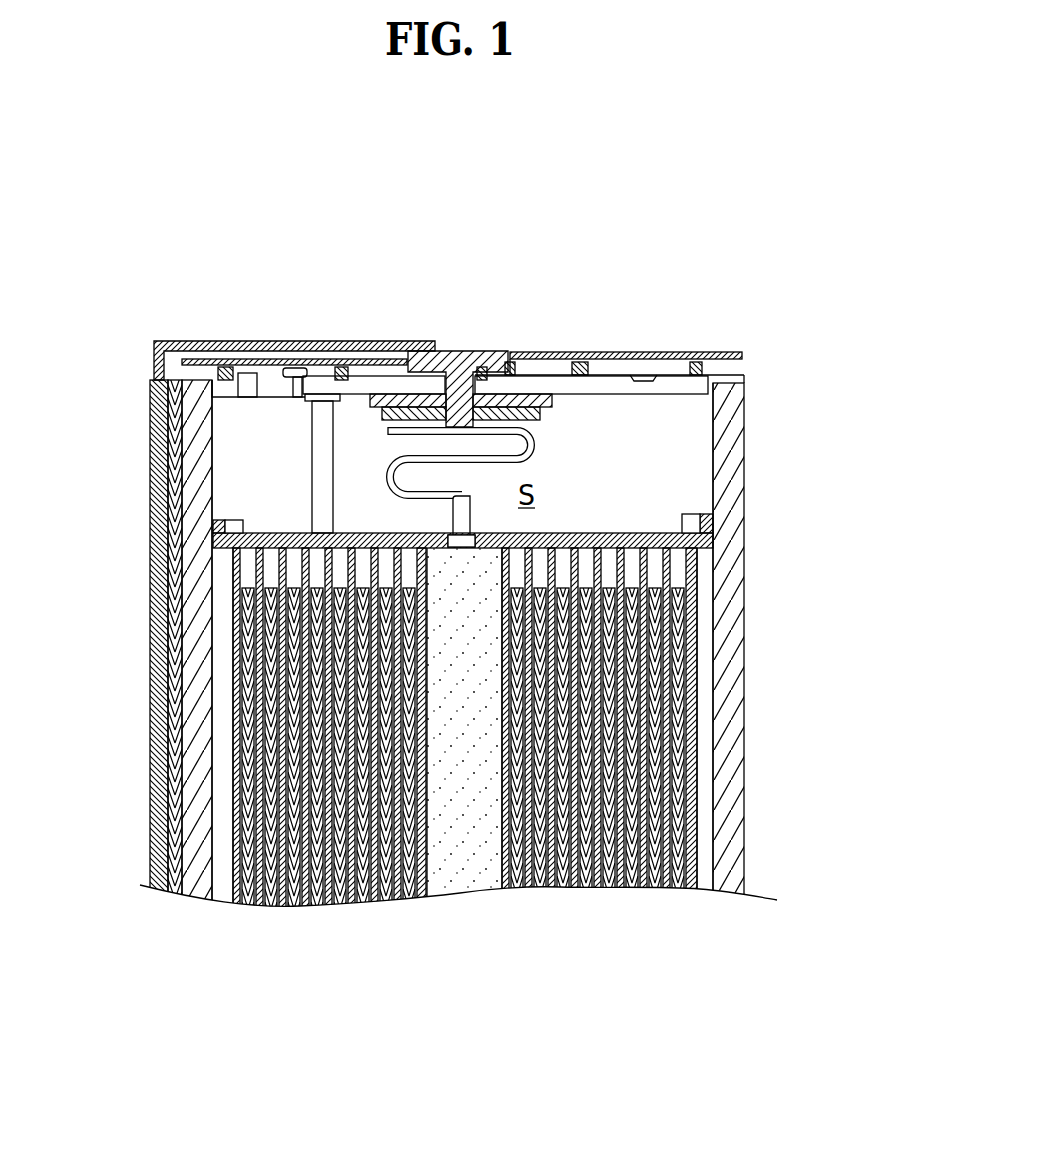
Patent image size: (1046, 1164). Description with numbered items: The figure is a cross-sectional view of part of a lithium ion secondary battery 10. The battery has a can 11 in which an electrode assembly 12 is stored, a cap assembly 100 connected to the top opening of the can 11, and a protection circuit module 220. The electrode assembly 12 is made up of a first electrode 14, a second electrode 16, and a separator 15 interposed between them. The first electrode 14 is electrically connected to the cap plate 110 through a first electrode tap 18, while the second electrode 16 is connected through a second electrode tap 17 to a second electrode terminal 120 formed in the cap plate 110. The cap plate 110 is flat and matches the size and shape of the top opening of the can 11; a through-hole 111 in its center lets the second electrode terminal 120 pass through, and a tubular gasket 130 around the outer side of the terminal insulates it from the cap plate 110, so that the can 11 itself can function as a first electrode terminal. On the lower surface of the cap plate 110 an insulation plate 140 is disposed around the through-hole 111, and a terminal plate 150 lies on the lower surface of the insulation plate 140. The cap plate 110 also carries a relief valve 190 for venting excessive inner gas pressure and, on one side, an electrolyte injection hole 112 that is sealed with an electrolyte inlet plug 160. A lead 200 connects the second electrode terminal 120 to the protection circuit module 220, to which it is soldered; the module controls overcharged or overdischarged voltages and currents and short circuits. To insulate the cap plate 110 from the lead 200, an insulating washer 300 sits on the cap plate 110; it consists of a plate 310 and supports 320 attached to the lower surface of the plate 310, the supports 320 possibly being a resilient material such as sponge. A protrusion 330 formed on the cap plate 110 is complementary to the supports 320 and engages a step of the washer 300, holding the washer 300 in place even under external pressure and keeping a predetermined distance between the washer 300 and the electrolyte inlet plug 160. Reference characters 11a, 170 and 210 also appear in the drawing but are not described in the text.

The lithium ion secondary battery 10 is at (138, 260).
The can 11 is at (735, 743).
The opening of case 11a is at (710, 482).
The electrode assembly 12 is at (708, 639).
The first electrode 14 is at (670, 887).
The separator 15 is at (678, 887).
The second electrode 16 is at (692, 888).
The second electrode tap 17 is at (347, 367).
The first electrode tap 18 is at (325, 458).
The cap assembly 100 is at (660, 312).
The cap plate 110 is at (595, 352).
The through-hole 111 is at (442, 372).
The electrolyte injection hole 112 is at (300, 397).
The second electrode terminal 120 is at (458, 351).
The gasket 130 is at (515, 352).
The insulation plate 140 is at (388, 473).
The terminal plate 150 is at (535, 420).
The electrolyte inlet plug 160 is at (295, 368).
The lower insulating plate 170 is at (267, 533).
The relief valve 190 is at (650, 380).
The lead 200 is at (183, 341).
The inner insulating layer 210 is at (178, 890).
The protection circuit module 220 is at (162, 888).
The washer 300 is at (738, 307).
The plate 310 is at (548, 352).
The supports 320 is at (697, 362).
The protrusion 330 is at (265, 359).